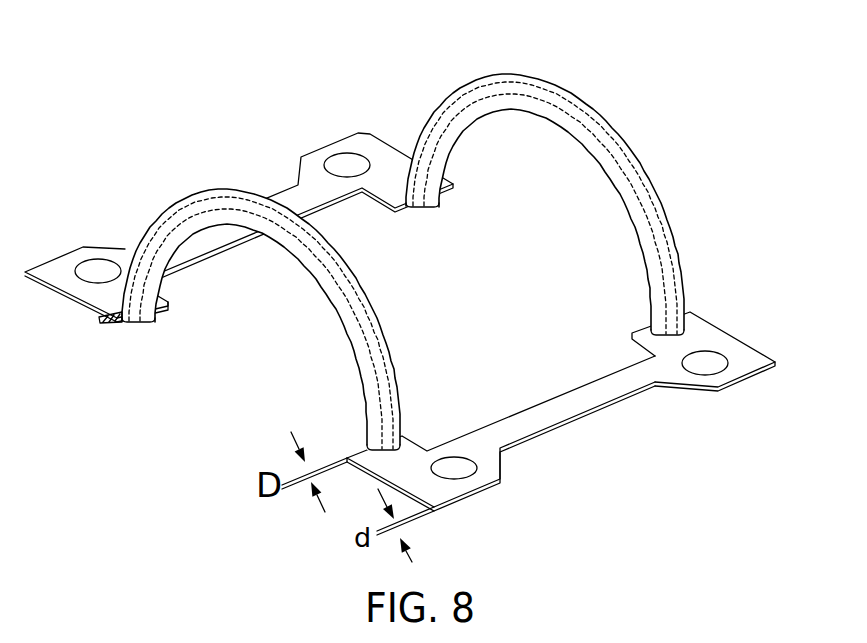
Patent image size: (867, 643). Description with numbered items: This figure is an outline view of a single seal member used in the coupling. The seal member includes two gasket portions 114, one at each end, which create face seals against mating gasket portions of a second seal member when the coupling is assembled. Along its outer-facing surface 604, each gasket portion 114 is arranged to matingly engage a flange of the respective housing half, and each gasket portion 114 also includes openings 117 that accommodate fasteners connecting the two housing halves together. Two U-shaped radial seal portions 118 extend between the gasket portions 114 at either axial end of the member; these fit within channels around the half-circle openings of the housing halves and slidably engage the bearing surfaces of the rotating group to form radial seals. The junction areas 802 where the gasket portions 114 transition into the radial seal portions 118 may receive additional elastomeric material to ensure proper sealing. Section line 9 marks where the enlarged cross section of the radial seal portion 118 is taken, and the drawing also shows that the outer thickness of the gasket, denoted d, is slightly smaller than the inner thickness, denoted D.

The section line 9- 9 is at (283, 283).
The gasket portion 114 is at (572, 407).
The opening 117 is at (454, 457).
The radial seal portion 118 is at (658, 226).
The outer-facing surface 604 is at (712, 343).
The junction area 802 is at (96, 316).